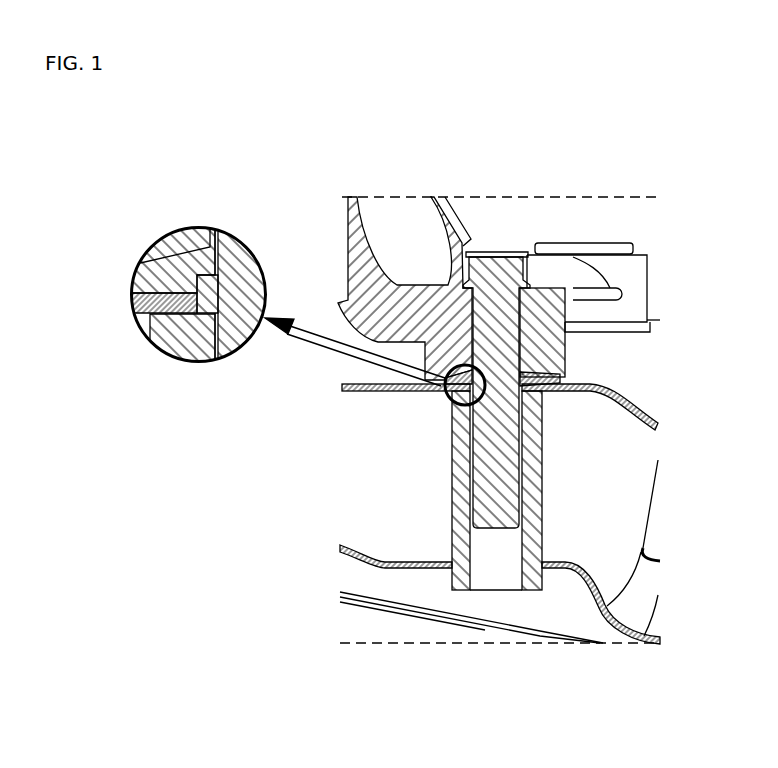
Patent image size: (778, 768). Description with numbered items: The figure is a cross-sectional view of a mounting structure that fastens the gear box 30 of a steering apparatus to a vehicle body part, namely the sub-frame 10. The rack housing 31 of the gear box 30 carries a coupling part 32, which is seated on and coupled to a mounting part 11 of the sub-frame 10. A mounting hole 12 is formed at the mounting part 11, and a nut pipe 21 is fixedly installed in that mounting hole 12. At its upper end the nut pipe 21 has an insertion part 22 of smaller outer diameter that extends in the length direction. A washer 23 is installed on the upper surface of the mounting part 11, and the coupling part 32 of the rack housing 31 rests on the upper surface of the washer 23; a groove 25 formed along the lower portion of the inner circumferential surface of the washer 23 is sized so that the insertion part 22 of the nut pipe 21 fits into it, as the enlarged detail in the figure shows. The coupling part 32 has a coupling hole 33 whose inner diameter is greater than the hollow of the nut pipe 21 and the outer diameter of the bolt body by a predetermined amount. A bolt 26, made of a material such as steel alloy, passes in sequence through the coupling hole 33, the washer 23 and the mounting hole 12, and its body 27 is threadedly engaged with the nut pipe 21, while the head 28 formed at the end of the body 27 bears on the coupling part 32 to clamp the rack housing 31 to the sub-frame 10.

The sub-frame 10 is at (587, 601).
The mounting part 11 is at (585, 386).
The mounting hole 12 is at (542, 432).
The nut pipe 21 is at (543, 526).
The insertion part 22 is at (210, 303).
The washer 23 is at (183, 260).
The groove 25 is at (203, 283).
The bolt 26 is at (499, 253).
The body 27 is at (505, 478).
The head 28 is at (508, 268).
The gear box 30 is at (419, 244).
The rack housing 31 is at (411, 217).
The coupling part 32 is at (562, 373).
The coupling hole 33 is at (512, 323).